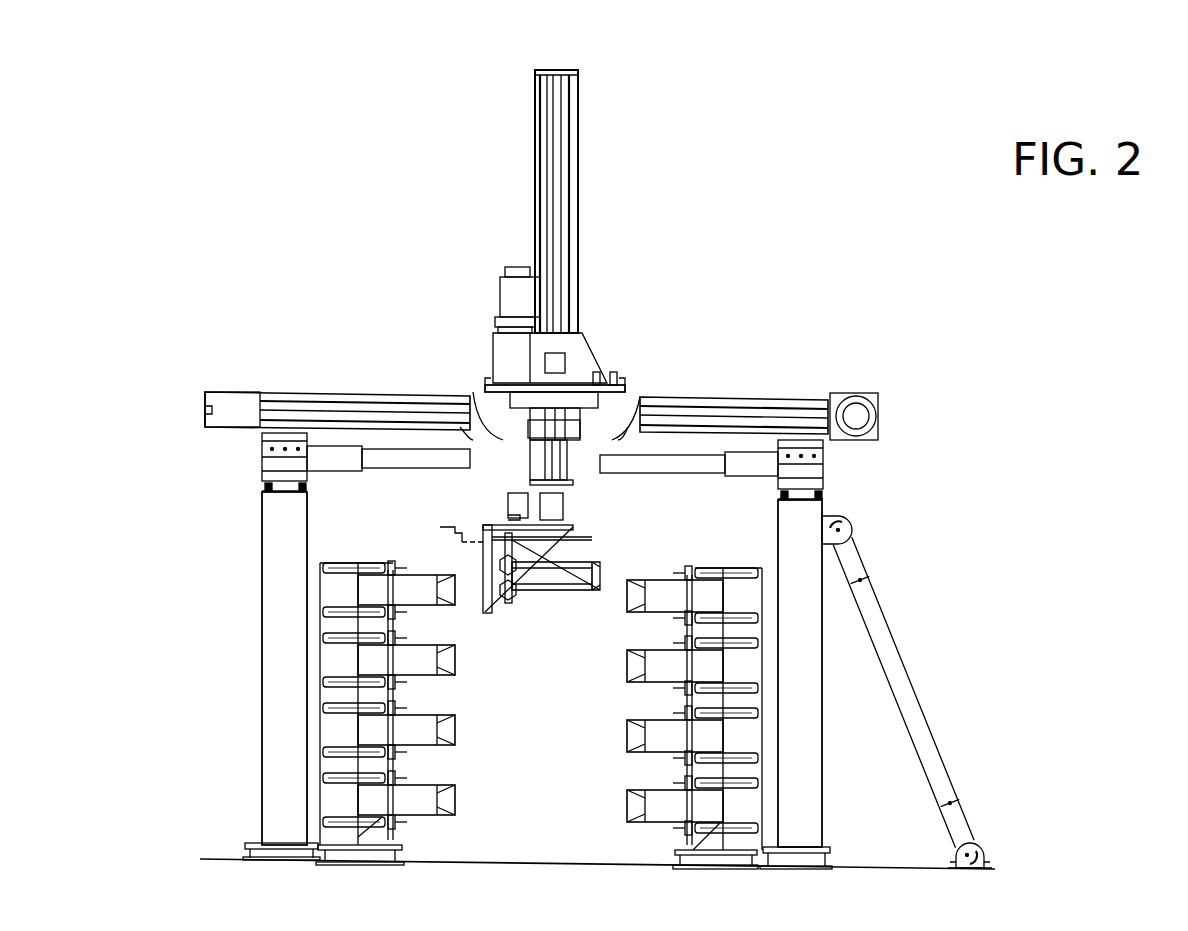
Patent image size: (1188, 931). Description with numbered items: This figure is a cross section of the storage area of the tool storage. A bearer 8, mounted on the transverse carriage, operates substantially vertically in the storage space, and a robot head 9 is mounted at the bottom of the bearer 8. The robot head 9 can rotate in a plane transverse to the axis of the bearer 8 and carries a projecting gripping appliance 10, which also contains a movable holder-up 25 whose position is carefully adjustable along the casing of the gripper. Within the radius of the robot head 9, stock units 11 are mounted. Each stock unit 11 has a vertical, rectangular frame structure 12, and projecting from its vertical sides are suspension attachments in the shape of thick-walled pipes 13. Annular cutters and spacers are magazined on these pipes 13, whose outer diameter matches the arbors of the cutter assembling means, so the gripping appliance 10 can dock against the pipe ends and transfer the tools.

The bearer 8 is at (537, 128).
The robot head 9 is at (334, 387).
The gripping appliance 10 is at (287, 443).
The holder-up 25 is at (341, 524).
The pipe 13 is at (420, 590).
The frame structure 12 is at (269, 688).
The stock unit 11 is at (243, 790).